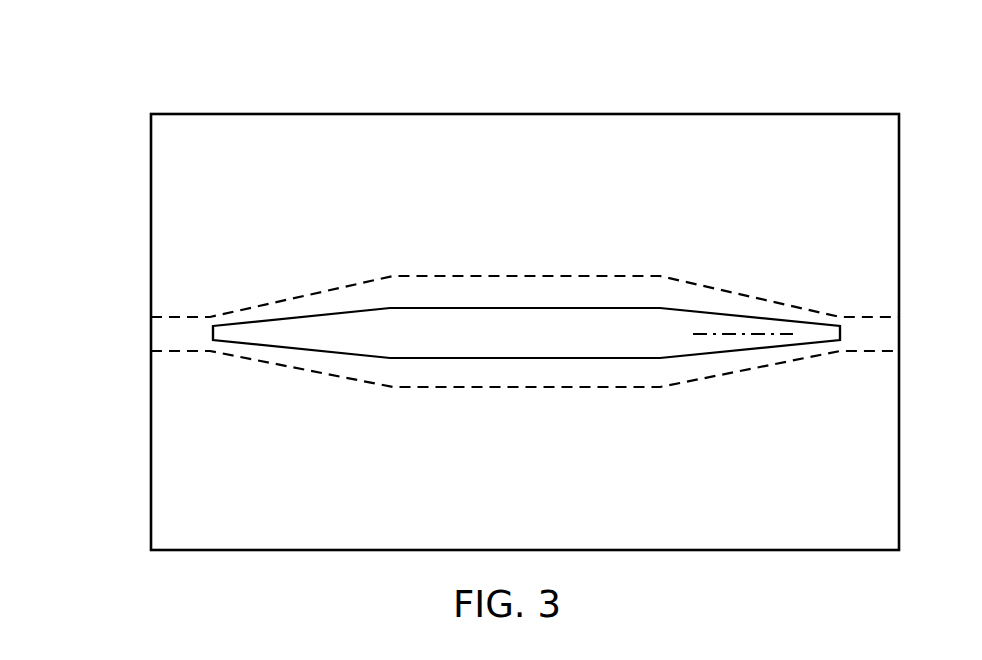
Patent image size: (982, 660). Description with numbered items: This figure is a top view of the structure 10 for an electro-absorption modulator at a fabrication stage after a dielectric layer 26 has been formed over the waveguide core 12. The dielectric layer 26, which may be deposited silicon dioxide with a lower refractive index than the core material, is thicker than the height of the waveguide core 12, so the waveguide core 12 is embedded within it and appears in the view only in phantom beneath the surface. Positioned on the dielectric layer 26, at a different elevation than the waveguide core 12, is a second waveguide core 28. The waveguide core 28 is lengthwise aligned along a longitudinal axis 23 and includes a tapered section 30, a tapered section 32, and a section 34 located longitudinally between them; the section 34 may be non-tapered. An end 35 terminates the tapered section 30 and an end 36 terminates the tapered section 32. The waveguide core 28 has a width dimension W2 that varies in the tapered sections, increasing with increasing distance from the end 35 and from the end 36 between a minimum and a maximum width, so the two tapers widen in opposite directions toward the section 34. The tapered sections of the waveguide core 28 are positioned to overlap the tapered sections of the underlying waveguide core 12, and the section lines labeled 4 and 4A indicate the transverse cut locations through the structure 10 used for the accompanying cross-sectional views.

The structure 10 is at (130, 97).
The waveguide core 12 is at (398, 388).
The longitudinal axis 23 is at (730, 334).
The dielectric layer 26 is at (201, 519).
The waveguide core 28 is at (493, 339).
The tapered section 30 is at (393, 67).
The tapered section 32 is at (840, 67).
The section 34 is at (657, 98).
The end 35 is at (213, 340).
The end 36 is at (840, 340).
The width dimension W2 is at (343, 408).
The section line 4- 4 is at (628, 144).
The section line 4A- 4A is at (107, 342).